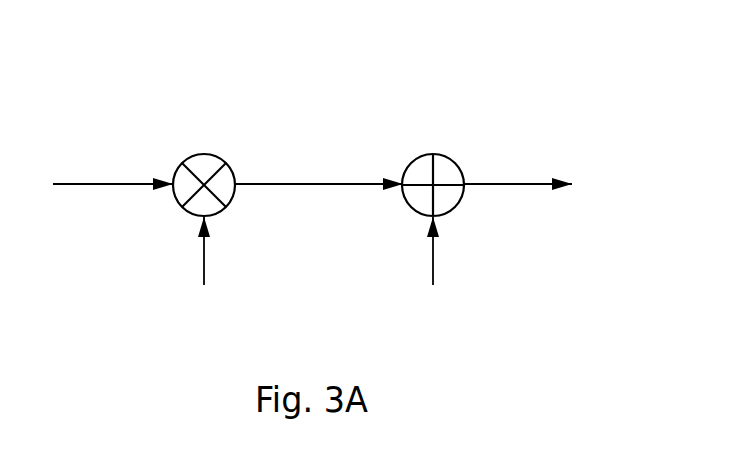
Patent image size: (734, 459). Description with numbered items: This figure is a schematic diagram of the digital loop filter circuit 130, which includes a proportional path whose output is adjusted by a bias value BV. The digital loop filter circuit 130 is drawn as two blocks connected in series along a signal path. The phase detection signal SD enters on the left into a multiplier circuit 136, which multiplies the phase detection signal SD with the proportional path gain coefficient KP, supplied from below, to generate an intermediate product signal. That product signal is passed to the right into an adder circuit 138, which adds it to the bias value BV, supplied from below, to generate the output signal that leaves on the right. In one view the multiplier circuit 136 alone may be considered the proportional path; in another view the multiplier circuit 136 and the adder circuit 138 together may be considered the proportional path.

The digital loop filter circuit 130 is at (335, 38).
The multiplier circuit 136 is at (226, 160).
The adder circuit 138 is at (456, 160).